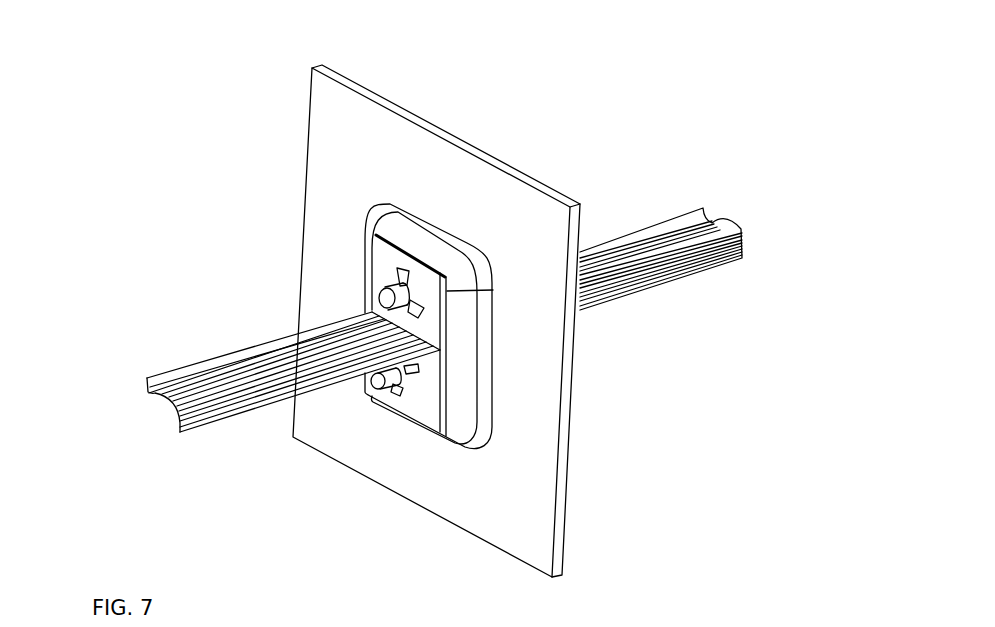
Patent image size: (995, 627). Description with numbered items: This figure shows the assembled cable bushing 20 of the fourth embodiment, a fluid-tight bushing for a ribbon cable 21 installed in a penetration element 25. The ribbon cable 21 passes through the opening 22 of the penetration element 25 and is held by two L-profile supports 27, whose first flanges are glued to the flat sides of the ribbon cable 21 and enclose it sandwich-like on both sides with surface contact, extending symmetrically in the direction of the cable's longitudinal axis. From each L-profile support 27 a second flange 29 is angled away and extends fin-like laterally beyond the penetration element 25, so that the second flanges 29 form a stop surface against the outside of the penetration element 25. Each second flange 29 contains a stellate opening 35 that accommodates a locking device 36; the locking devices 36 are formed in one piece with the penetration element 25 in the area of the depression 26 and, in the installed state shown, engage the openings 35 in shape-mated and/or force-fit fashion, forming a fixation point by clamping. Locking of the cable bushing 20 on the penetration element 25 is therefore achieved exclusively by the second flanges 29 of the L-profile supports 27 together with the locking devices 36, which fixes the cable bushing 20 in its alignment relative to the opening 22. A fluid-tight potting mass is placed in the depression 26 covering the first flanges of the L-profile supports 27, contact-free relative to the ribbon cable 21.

The cable bushing 20 is at (560, 133).
The ribbon cable 21 is at (663, 237).
The opening 22 is at (447, 323).
The penetration element 25 is at (322, 217).
The depression 26 is at (460, 392).
The L-profile support 27 is at (400, 240).
The second flange 29 is at (382, 255).
The opening 35 is at (415, 288).
The locking device 36 is at (380, 298).